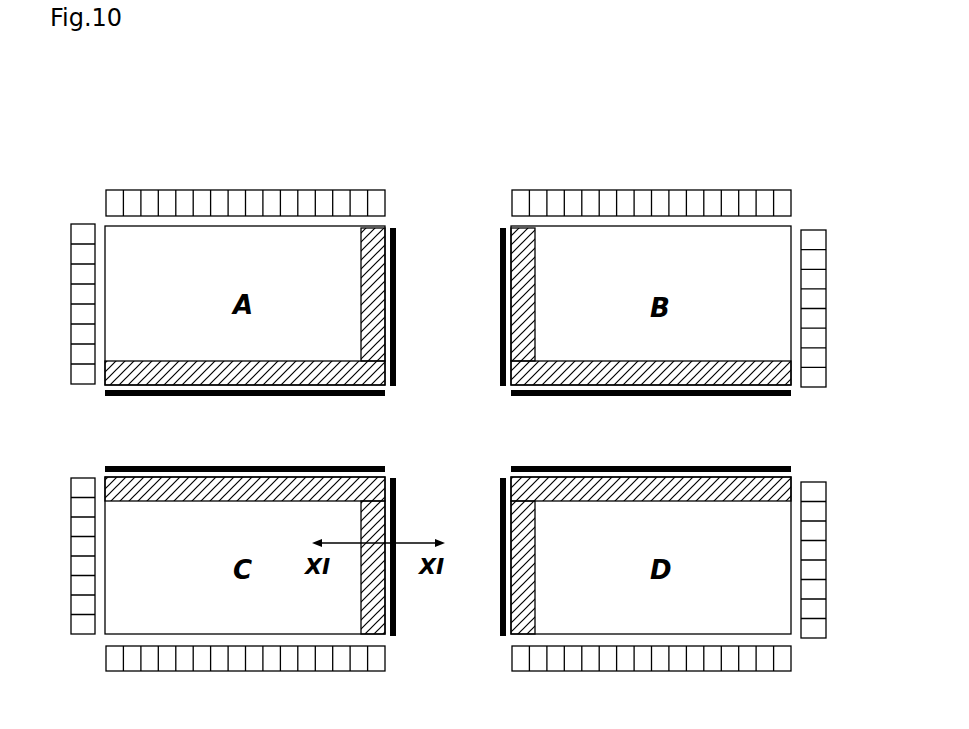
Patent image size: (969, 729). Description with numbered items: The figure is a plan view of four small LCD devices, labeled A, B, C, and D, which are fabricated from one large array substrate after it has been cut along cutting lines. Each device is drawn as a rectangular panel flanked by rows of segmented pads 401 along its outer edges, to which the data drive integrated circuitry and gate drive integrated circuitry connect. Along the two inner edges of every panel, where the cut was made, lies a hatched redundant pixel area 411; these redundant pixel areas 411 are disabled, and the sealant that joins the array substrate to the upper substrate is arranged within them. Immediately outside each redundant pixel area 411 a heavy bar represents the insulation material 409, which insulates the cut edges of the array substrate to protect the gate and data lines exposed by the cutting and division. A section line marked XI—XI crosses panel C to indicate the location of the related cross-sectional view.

The data driving IC / pad portion 401 is at (85, 192).
The insulation material 409 is at (499, 298).
The redundant pixel area 411 is at (512, 338).